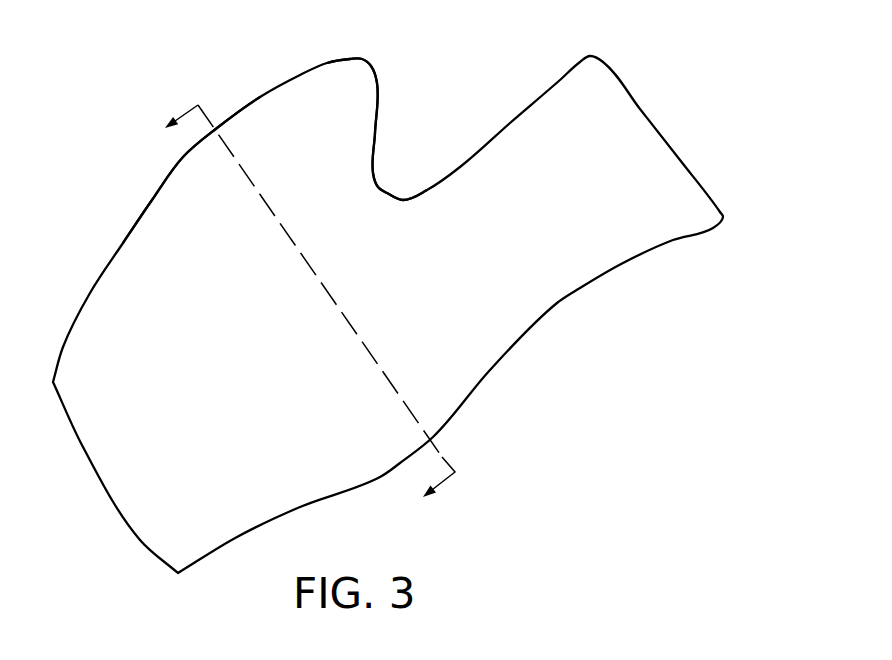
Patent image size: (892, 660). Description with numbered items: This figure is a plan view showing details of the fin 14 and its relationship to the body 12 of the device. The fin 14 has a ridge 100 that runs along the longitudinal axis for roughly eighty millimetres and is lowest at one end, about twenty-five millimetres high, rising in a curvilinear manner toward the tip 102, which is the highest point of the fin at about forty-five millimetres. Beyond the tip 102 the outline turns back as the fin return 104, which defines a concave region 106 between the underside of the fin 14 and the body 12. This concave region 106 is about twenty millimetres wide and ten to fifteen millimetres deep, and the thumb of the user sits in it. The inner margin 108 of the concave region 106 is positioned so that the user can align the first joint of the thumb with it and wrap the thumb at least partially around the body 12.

The body 12 is at (525, 368).
The fin 14 is at (190, 77).
The ridge 100 is at (183, 157).
The tip 102 is at (353, 68).
The fin return 104 is at (380, 103).
The concave region 106 is at (393, 145).
The inner margin 108 is at (383, 192).